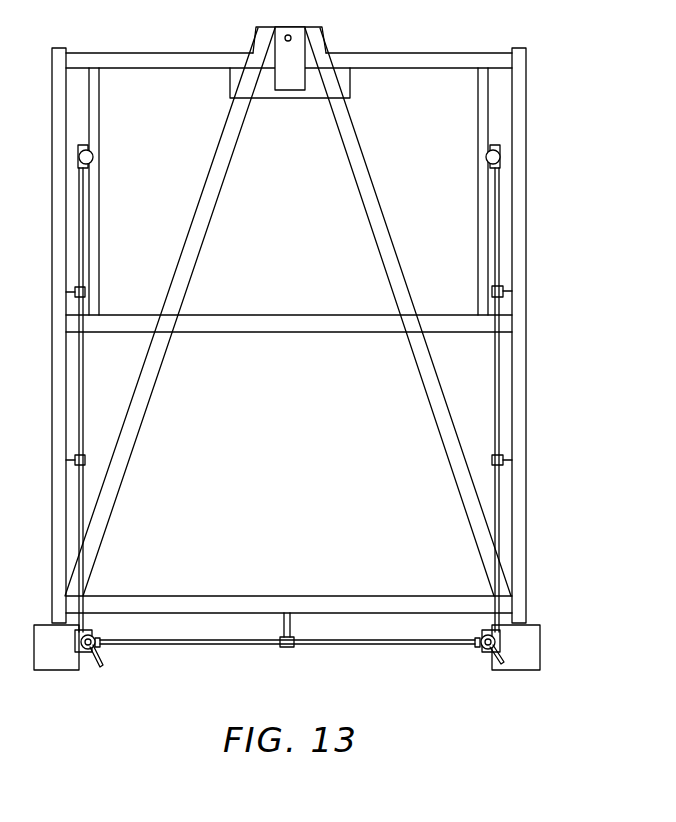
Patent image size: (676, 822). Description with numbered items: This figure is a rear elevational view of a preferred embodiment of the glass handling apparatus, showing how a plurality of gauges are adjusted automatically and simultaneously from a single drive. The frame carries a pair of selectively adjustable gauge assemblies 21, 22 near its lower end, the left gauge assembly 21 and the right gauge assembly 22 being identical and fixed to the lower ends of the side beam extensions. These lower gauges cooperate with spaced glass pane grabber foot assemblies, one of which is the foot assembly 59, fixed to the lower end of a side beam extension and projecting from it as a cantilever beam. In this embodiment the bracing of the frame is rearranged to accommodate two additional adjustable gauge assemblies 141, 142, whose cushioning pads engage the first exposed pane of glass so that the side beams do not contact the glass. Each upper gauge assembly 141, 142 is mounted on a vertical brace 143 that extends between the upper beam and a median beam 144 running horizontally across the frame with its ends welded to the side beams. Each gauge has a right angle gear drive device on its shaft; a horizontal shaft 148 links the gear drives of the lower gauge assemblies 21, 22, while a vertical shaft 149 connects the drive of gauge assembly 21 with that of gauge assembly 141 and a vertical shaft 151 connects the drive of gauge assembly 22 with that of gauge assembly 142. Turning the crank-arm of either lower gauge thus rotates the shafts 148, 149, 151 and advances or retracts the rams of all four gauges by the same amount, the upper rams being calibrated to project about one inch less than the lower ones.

The adjustable gauge assembly 21 is at (92, 672).
The adjustable gauge assembly 22 is at (478, 662).
The foot assembly 59 is at (550, 649).
The adjustable gauge assembly 141 is at (87, 132).
The adjustable gauge assembly 142 is at (500, 130).
The vertical brace 143 is at (100, 248).
The median beam 144 is at (262, 325).
The horizontal shaft 148 is at (195, 645).
The vertical shaft 149 is at (85, 355).
The vertical shaft 151 is at (495, 404).